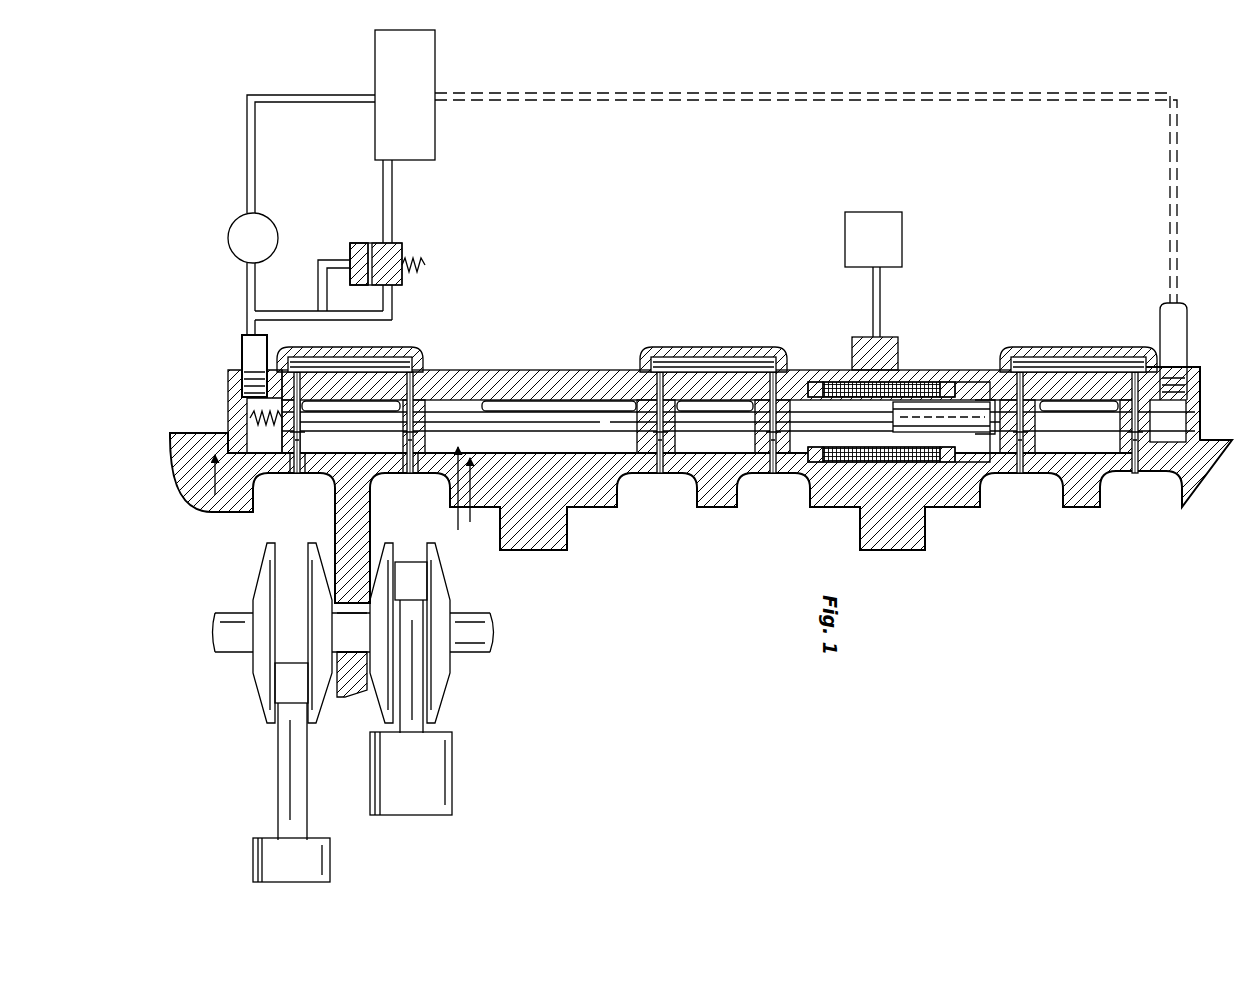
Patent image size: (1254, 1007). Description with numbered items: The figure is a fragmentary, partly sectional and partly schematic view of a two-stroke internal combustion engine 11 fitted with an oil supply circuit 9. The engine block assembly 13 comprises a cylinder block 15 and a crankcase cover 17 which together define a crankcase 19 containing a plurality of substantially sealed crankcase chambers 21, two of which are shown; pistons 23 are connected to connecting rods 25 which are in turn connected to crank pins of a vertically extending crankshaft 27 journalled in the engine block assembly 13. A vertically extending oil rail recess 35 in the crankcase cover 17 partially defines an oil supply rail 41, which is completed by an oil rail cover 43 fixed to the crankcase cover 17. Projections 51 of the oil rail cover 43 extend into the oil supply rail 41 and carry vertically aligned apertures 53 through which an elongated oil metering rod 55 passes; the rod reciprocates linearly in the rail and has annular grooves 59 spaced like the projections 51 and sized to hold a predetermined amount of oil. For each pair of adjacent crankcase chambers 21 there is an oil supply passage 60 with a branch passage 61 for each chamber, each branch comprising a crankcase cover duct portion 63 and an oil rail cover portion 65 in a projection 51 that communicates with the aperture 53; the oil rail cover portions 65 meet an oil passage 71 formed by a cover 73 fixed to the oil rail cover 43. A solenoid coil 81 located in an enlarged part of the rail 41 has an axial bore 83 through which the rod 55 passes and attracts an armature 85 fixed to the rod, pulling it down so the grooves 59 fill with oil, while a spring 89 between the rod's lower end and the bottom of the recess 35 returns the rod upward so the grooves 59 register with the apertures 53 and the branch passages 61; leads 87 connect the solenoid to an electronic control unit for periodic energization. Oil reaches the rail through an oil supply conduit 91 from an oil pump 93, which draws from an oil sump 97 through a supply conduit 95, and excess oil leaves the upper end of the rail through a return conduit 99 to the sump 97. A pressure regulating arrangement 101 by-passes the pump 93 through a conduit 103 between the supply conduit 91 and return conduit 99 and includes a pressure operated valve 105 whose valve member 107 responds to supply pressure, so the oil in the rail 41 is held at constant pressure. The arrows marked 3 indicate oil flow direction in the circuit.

The oil flow path 3 is at (354, 488).
The oil supply circuit 9 is at (748, 246).
The two-stroke internal combustion engine 11 is at (515, 738).
The engine block assembly 13 is at (252, 582).
The cylinder block 15 is at (357, 688).
The crankcase cover 17 is at (590, 490).
The crankcase 19 is at (445, 548).
The crankcase chambers 21 is at (295, 475).
The pistons 23 is at (332, 845).
The connecting rods 25 is at (285, 790).
The crankshaft 27 is at (492, 632).
The oil rail recess 35 is at (612, 470).
The oil supply rail 41 is at (600, 408).
The oil rail cover 43 is at (558, 378).
The projections 51 is at (447, 462).
The apertures 53 is at (238, 372).
The oil metering rod 55 is at (578, 403).
The annular grooves 59 is at (410, 372).
The oil supply passage 60 is at (338, 358).
The branch passage 61 is at (300, 470).
The crankcase cover duct portion 63 is at (305, 465).
The oil rail cover portion 65 is at (292, 372).
The oil passage 71 is at (372, 362).
The cover 73 is at (350, 367).
The solenoid coil 81 is at (940, 462).
The axial bore 83 is at (885, 462).
The armature 85 is at (965, 440).
The leads 87 is at (880, 330).
The spring 89 is at (240, 415).
The oil supply conduit 91 is at (243, 340).
The oil pump 93 is at (247, 215).
The supply conduit 95 is at (275, 100).
The oil sump 97 is at (380, 90).
The return conduit 99 is at (843, 100).
The pressure regulating arrangement 101 is at (345, 240).
The conduit 103 is at (309, 318).
The pressure operated valve 105 is at (398, 237).
The valve member 107 is at (378, 243).